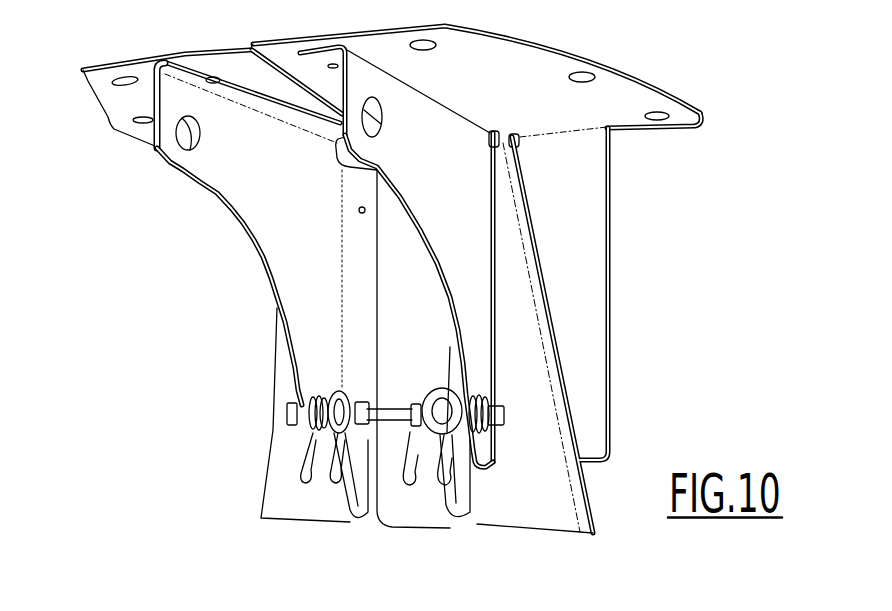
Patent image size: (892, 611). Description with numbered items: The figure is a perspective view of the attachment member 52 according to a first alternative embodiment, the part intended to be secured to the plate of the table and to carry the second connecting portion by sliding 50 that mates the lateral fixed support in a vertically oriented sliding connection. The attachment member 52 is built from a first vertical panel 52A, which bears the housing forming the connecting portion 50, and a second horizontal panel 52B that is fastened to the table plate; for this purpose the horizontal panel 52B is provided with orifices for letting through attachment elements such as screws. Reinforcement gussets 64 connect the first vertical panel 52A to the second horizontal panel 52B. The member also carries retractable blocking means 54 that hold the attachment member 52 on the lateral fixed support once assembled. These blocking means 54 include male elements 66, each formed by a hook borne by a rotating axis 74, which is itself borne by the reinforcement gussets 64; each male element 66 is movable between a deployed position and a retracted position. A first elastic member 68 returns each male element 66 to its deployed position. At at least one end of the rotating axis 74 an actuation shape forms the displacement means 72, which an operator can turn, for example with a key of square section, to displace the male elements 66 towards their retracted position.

The second connecting portion by sliding 50 is at (612, 482).
The attachment member 52 is at (146, 215).
The first vertical panel 52A is at (604, 293).
The second horizontal panel 52B is at (522, 43).
The retractable blocking means 54 is at (268, 539).
The reinforcement gussets 64 is at (267, 210).
The male element 66 is at (360, 500).
The first elastic member 68 is at (293, 470).
The displacement means 72 is at (287, 411).
The rotating axis 74 is at (400, 409).